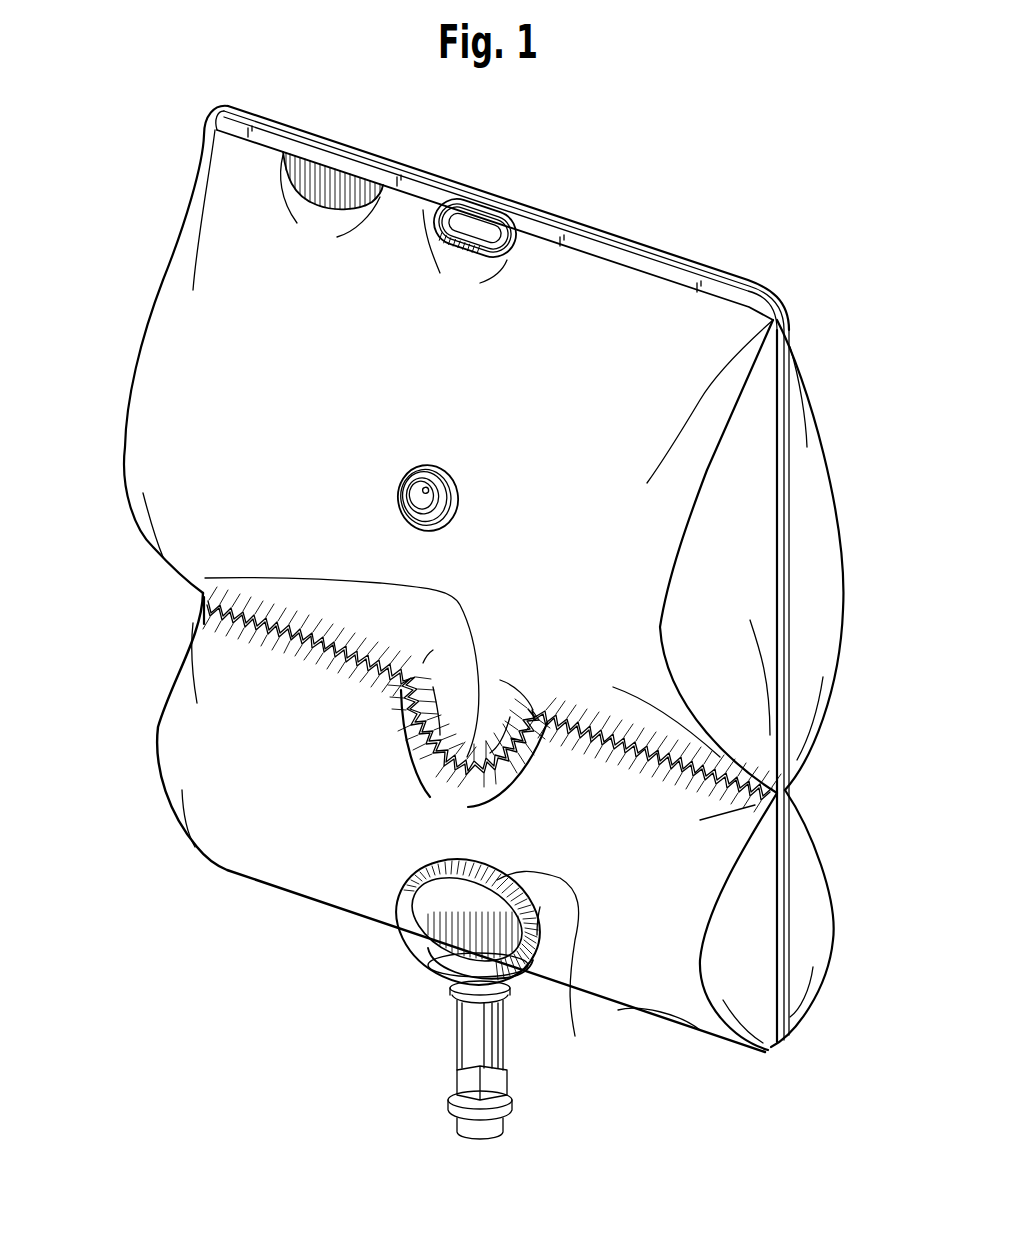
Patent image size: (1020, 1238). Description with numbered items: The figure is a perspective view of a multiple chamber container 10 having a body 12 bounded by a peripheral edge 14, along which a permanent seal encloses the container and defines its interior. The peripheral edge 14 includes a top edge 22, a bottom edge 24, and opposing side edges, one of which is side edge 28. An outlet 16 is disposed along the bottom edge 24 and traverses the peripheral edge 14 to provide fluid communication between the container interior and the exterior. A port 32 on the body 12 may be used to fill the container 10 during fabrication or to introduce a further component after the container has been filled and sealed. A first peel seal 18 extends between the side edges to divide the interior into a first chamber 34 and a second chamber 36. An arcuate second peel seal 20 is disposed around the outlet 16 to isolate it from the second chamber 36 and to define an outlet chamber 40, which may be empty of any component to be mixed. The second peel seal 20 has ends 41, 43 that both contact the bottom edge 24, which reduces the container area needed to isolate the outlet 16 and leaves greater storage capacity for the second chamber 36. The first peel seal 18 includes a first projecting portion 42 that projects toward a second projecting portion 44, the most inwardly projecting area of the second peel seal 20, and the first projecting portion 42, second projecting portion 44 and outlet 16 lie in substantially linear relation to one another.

The container 10 is at (697, 207).
The body 12 is at (152, 224).
The peripheral edge 14 is at (572, 213).
The outlet 16 is at (463, 1048).
The first peel seal 18 is at (668, 745).
The second peel seal 20 is at (544, 965).
The top edge 22 is at (362, 145).
The bottom edge 24 is at (692, 1027).
The side edge 28 is at (787, 540).
The port 32 is at (397, 513).
The first chamber 34 is at (232, 445).
The second chamber 36 is at (182, 768).
The outlet chamber 40 is at (427, 945).
The end 41 is at (433, 933).
The first projecting portion 42 is at (205, 578).
The end 43 is at (541, 907).
The second projecting portion 44 is at (470, 867).